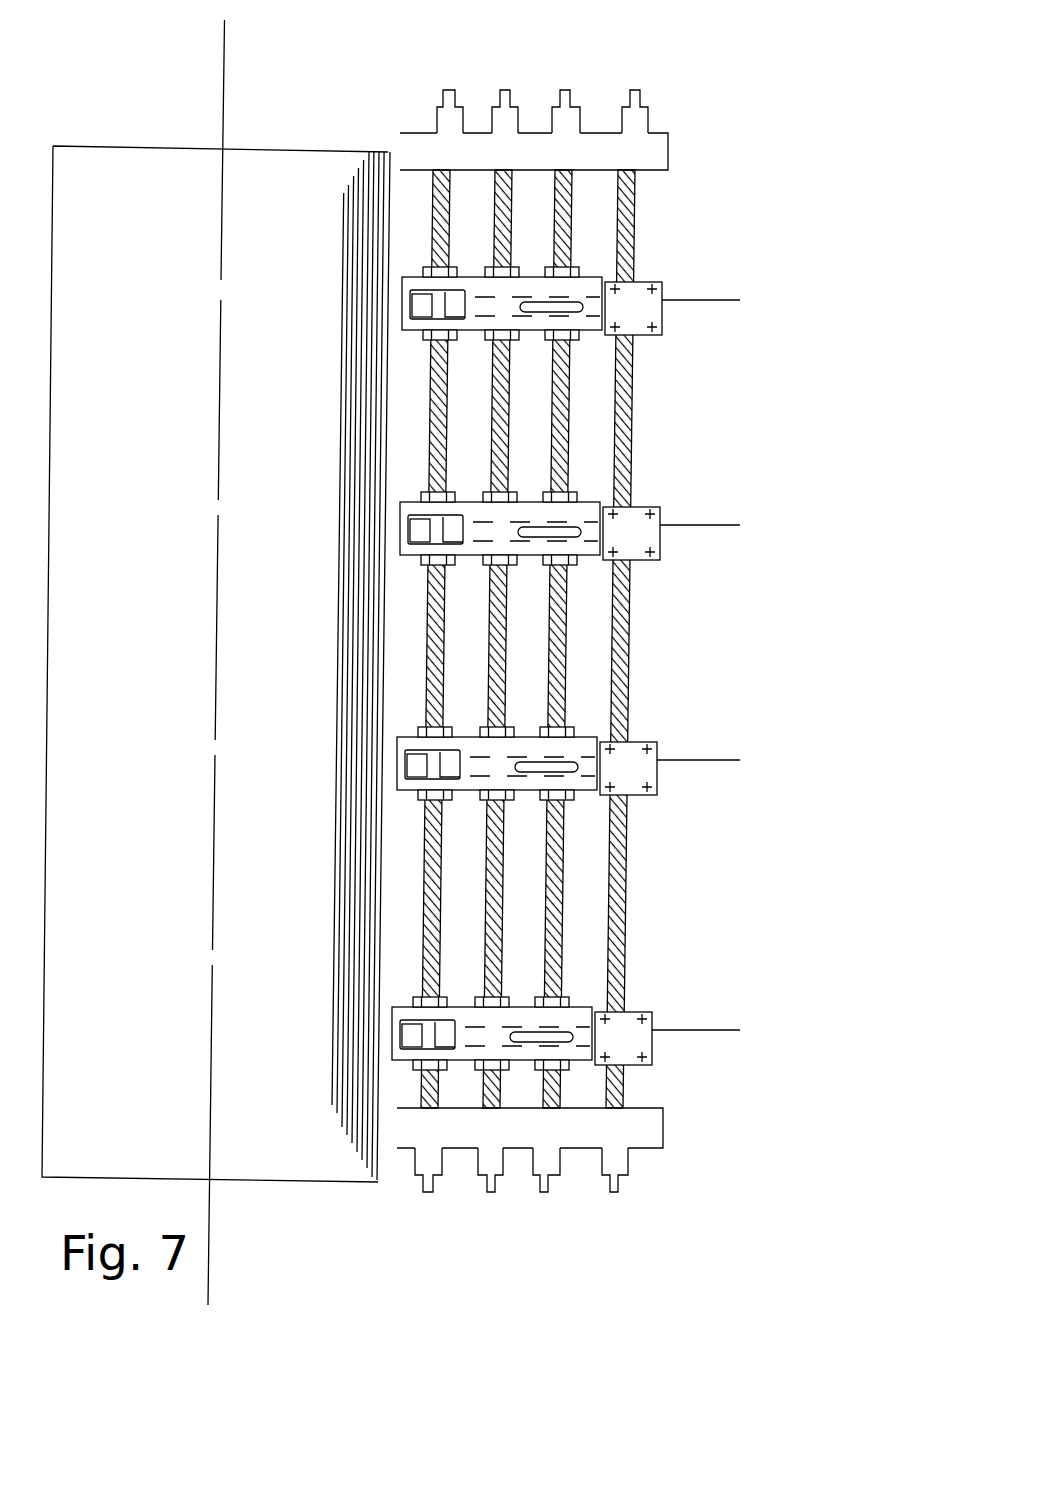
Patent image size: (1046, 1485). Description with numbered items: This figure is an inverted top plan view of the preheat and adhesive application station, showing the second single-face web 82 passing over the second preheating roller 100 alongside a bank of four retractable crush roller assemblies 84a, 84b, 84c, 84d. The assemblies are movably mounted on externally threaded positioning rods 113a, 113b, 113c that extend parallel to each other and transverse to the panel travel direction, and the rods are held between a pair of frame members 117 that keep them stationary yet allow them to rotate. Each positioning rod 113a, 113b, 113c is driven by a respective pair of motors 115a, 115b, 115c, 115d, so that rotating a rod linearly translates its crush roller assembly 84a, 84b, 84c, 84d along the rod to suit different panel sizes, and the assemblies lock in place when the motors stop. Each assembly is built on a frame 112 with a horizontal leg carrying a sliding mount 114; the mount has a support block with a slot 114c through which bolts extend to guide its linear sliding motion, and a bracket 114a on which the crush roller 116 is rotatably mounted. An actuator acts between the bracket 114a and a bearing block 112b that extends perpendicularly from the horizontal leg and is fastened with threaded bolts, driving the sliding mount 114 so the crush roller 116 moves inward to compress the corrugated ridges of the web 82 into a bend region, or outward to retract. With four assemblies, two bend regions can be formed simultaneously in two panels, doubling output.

The second preheating roller 100 is at (277, 147).
The second single-face web 82 is at (362, 1005).
The first retractable crush roller assembly 84a is at (733, 297).
The second retractable crush roller assembly 84b is at (733, 529).
The third retractable crush roller assembly 84c is at (730, 766).
The fourth retractable crush roller assembly 84d is at (729, 1049).
The frame 112 is at (657, 335).
The bearing block 112b is at (660, 283).
The first positioning rod 113a is at (431, 190).
The second positioning rod 113b is at (485, 1094).
The third positioning rod 113c is at (557, 1092).
The sliding mount 114 is at (580, 330).
The bracket 114a is at (410, 316).
The slot 114c is at (582, 305).
The first pair of motors 115a is at (443, 108).
The second pair of motors 115b is at (508, 117).
The third pair of motors 115c is at (577, 112).
The fourth pair of motors 115d is at (647, 113).
The crush roller 116 is at (457, 312).
The frame members 117 is at (667, 150).